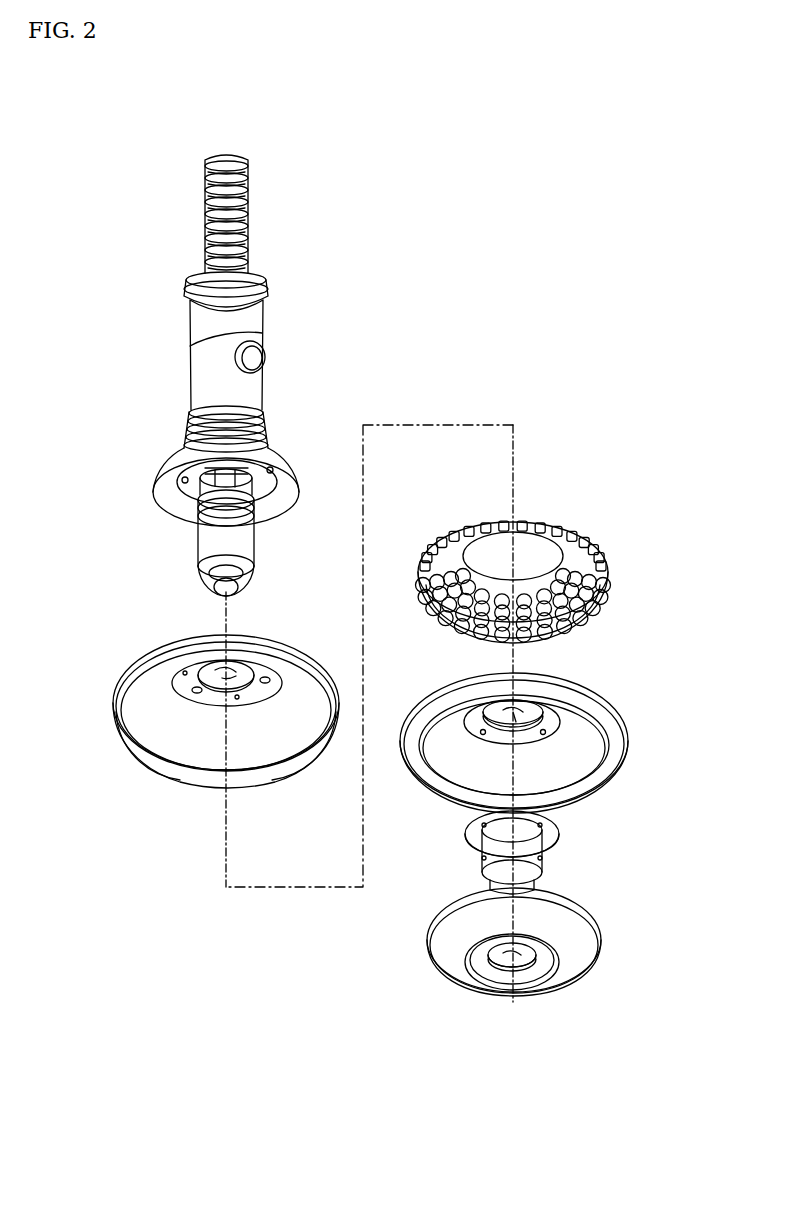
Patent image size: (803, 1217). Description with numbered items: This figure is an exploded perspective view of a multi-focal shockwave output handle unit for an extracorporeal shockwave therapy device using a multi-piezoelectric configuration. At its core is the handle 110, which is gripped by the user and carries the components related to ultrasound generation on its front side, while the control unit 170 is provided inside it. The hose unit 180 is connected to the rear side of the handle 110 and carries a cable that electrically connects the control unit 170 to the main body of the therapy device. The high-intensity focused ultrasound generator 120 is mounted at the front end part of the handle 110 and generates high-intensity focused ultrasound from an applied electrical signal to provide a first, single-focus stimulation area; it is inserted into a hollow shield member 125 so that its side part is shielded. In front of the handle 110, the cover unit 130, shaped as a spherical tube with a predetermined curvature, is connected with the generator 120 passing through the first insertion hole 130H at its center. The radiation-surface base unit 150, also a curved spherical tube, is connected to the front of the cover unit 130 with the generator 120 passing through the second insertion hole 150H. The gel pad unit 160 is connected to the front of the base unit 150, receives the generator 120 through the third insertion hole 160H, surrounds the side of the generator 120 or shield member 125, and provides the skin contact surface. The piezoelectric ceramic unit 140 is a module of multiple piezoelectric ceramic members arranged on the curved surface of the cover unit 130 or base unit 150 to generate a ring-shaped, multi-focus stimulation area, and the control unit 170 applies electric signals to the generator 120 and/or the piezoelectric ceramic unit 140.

The handle 110 is at (210, 388).
The high-intensity focused ultrasound generator 120 is at (217, 545).
The shield member 125 is at (528, 847).
The cover unit 130 is at (180, 643).
The first insertion hole 130H is at (204, 658).
The piezoelectric ceramic unit 140 is at (580, 537).
The radiation-surface base unit 150 is at (573, 680).
The second insertion hole 150H is at (520, 715).
The gel pad unit 160 is at (572, 950).
The third insertion hole 160H is at (522, 962).
The control unit 170 is at (236, 345).
The hose unit 180 is at (200, 190).